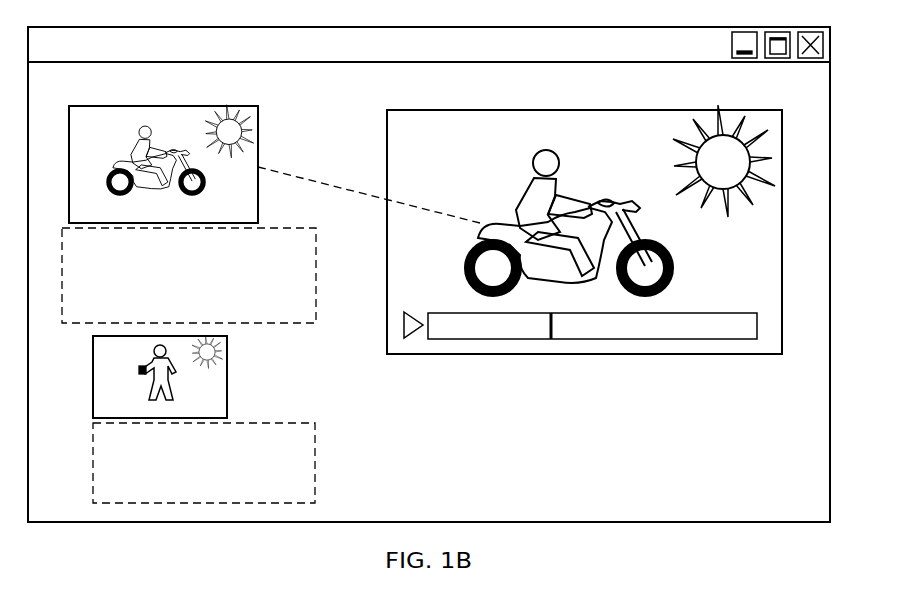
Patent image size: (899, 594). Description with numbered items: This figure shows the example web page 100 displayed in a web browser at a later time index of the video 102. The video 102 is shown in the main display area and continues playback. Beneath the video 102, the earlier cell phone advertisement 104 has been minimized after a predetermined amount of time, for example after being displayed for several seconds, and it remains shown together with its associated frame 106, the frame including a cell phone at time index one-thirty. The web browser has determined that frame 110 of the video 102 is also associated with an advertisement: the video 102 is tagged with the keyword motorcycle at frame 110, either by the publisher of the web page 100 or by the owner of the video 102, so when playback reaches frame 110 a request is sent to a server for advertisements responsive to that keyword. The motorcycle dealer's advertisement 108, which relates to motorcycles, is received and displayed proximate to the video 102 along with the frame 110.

The web page 100 is at (200, 522).
The video 102 is at (387, 148).
The advertisement 104 is at (315, 445).
The frame 106 is at (226, 355).
The advertisement 108 is at (316, 272).
The frame 110 is at (258, 117).